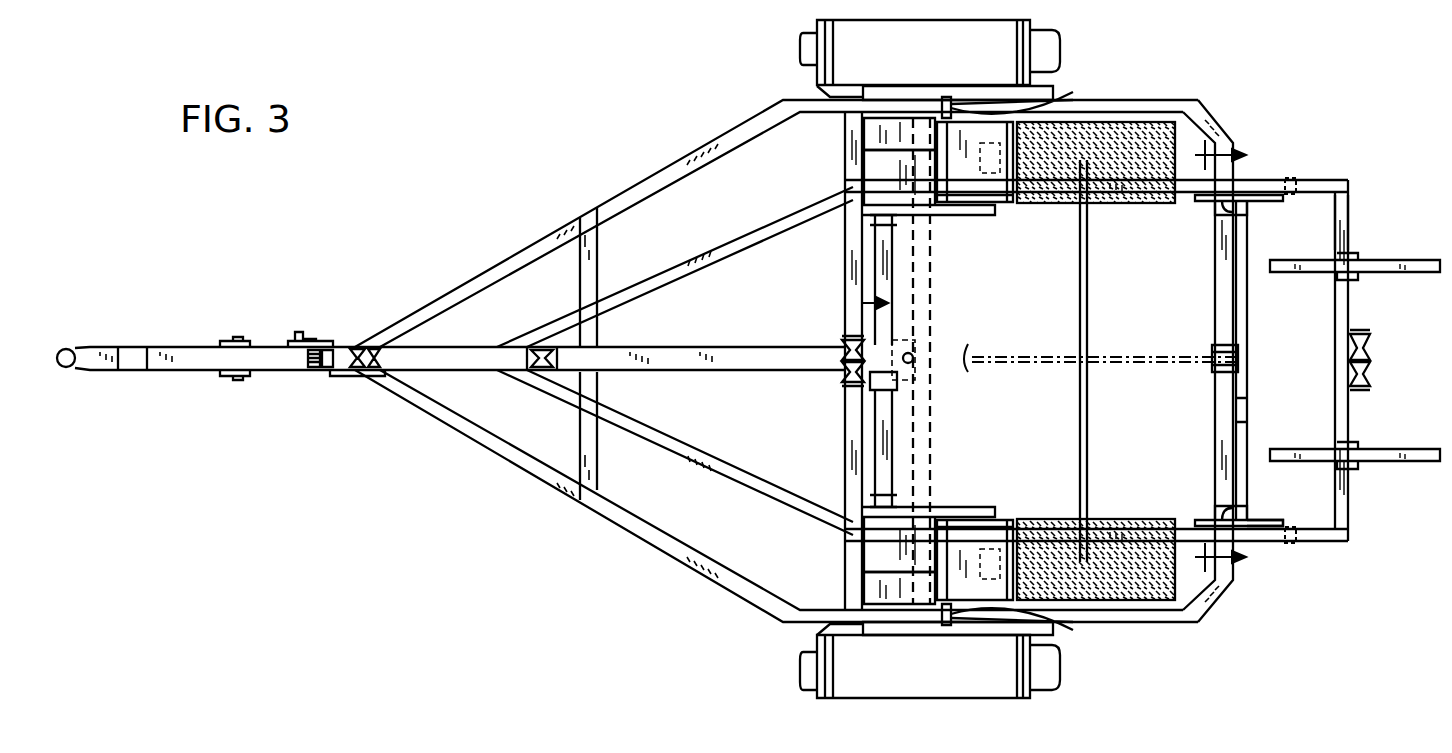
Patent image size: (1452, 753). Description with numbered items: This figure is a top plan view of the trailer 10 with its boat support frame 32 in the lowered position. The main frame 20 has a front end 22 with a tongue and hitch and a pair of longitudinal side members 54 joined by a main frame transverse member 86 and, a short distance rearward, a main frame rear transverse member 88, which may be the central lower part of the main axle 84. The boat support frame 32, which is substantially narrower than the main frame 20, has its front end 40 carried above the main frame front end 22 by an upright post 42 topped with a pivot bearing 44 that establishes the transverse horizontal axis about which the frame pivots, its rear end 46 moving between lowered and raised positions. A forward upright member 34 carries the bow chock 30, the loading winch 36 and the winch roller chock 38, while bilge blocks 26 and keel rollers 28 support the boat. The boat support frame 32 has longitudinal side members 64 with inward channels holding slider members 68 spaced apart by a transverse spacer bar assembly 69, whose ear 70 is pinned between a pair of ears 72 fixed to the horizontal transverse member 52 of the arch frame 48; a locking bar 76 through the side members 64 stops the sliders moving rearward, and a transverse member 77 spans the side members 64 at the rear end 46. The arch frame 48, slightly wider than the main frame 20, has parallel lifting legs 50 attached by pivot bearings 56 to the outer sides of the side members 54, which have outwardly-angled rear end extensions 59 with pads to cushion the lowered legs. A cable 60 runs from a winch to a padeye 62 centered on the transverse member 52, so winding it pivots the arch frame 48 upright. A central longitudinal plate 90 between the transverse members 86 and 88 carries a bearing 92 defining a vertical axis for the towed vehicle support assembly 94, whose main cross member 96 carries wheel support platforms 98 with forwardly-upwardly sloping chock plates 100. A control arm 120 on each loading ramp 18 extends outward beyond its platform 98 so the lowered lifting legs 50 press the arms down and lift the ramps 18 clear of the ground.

The trailer 10 is at (540, 193).
The loading ramps 18 is at (1115, 122).
The main frame 20 is at (658, 548).
The front end 22 is at (135, 371).
The bilge blocks 26 is at (1373, 274).
The keel rollers 28 is at (556, 358).
The bow chock 30 is at (372, 356).
The boat support frame 32 is at (680, 458).
The forward upright member 34 is at (340, 374).
The loading winch 36 is at (305, 341).
The winch roller chock 38 is at (345, 352).
The front end 40 is at (190, 366).
The upright post 42 is at (242, 340).
The pivot bearing 44 is at (240, 378).
The rear end 46 is at (1348, 185).
The arch frame 48 is at (1248, 382).
The lifting legs 50 is at (1170, 100).
The horizontal transverse member 52 is at (1226, 316).
The longitudinal side members 54 is at (812, 108).
The pivot bearings 56 is at (898, 90).
The rear end extensions 59 is at (1073, 92).
The cable 60 is at (1095, 365).
The padeye 62 is at (1216, 372).
The longitudinal side members 64 is at (1135, 195).
The slider member 68 is at (1291, 180).
The transverse spacer bar assembly 69 is at (1248, 412).
The ear 70 is at (1255, 521).
The ears 72 is at (1225, 212).
The locking bar 76 is at (1088, 318).
The transverse member 77 is at (1346, 208).
The main axle 84 is at (850, 455).
The main frame transverse member 86 is at (845, 238).
The main frame rear transverse member 88 is at (930, 456).
The central longitudinal plate 90 is at (885, 383).
The bearing 92 is at (915, 352).
The towed vehicle support assembly 94 is at (858, 306).
The main cross member 96 is at (900, 272).
The wheel support platforms 98 is at (873, 158).
The chock plate 100 is at (870, 138).
The control arm 120 is at (982, 86).